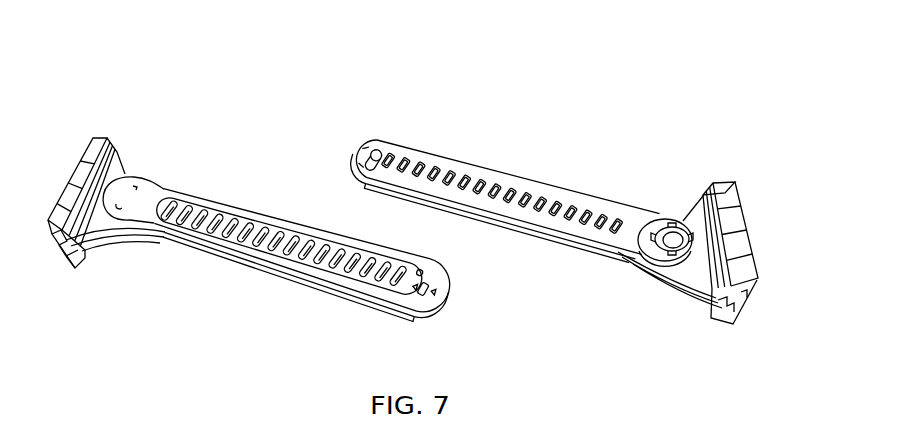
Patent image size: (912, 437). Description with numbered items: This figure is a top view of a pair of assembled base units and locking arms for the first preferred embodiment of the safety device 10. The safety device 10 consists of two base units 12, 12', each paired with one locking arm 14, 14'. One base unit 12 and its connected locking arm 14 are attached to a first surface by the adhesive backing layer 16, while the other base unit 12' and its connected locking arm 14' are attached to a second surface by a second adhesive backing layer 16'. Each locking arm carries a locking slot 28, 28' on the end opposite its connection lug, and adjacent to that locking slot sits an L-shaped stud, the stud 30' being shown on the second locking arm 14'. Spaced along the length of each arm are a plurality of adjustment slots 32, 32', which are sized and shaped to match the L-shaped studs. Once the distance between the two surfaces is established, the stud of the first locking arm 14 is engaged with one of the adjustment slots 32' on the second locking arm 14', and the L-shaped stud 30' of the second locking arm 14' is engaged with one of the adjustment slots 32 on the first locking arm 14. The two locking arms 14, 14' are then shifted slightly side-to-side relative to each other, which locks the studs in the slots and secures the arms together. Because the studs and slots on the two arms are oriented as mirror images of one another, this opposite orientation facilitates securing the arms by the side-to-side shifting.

The safety device 10 is at (388, 70).
The base unit 12 is at (73, 168).
The base unit 12' is at (753, 215).
The locking arm 14 is at (269, 258).
The locking arm 14' is at (513, 201).
The adhesive backing layer 16 is at (68, 194).
The adhesive backing layer 16' is at (753, 236).
The locking slot 28 is at (424, 289).
The locking slot 28' is at (363, 157).
The L-shaped stud 30' is at (373, 160).
The adjustment slots 32 is at (289, 246).
The adjustment slots 32' is at (502, 193).